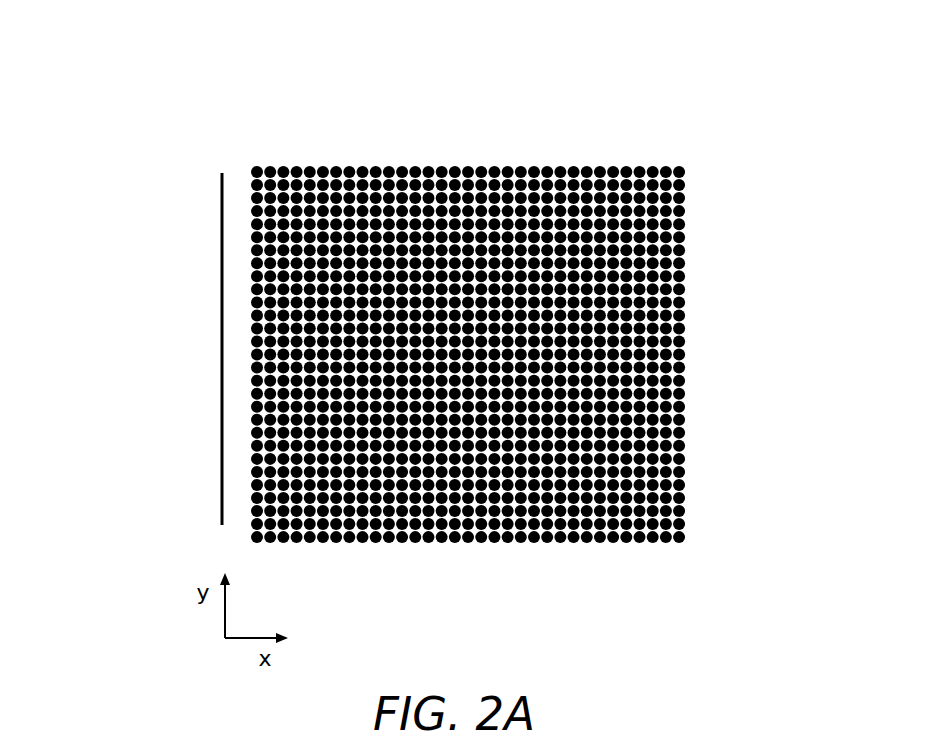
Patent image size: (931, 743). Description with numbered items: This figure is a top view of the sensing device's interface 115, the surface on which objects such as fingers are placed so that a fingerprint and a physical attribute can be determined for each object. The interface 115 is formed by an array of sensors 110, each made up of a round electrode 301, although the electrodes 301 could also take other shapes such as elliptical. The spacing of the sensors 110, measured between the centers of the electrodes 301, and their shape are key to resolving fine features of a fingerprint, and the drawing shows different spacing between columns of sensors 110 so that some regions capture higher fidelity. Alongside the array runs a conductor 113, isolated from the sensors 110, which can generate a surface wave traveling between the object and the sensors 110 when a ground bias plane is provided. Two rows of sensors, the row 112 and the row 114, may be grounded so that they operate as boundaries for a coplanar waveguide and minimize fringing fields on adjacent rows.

The interface 115 is at (430, 37).
The sensors 110 is at (712, 352).
The electrodes 301 is at (683, 475).
The row of sensors 114 is at (255, 270).
The row of sensors 112 is at (255, 366).
The conductor 113 is at (222, 500).